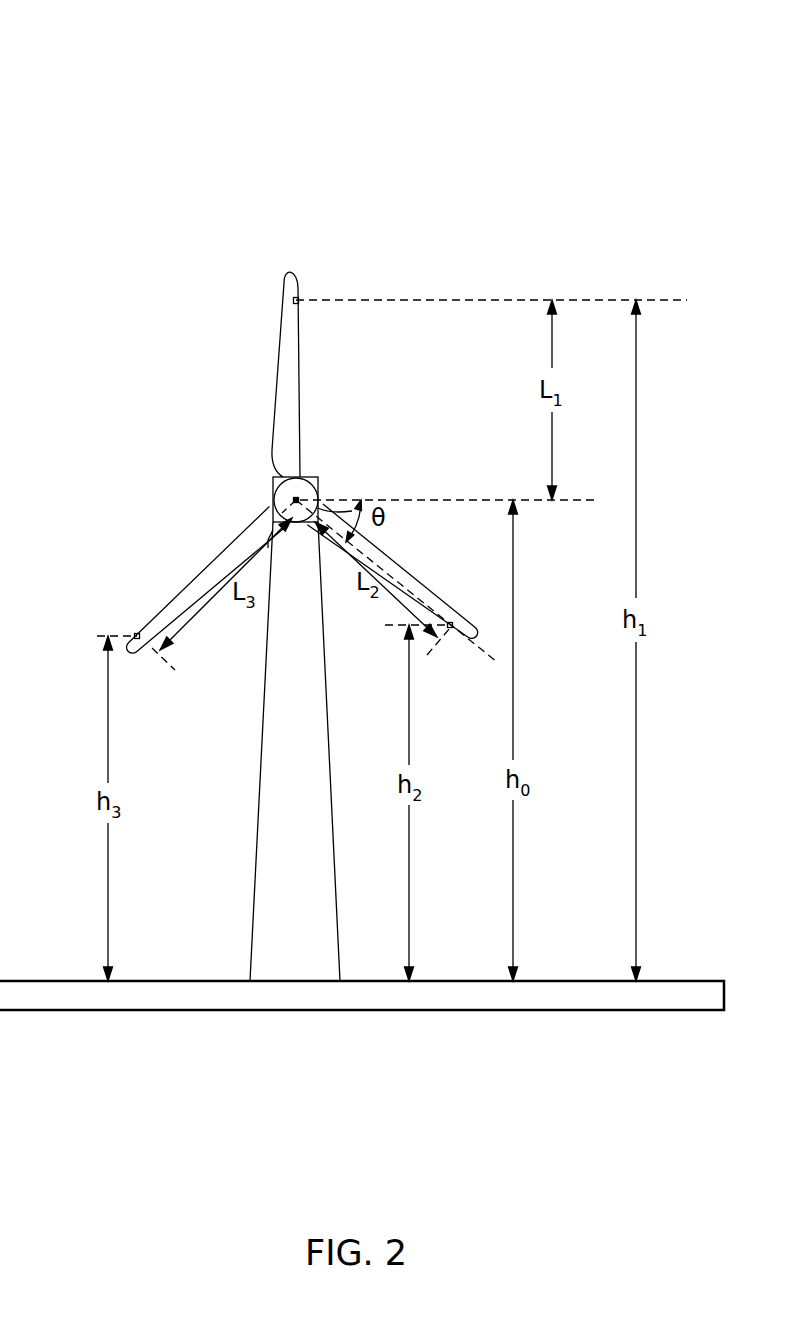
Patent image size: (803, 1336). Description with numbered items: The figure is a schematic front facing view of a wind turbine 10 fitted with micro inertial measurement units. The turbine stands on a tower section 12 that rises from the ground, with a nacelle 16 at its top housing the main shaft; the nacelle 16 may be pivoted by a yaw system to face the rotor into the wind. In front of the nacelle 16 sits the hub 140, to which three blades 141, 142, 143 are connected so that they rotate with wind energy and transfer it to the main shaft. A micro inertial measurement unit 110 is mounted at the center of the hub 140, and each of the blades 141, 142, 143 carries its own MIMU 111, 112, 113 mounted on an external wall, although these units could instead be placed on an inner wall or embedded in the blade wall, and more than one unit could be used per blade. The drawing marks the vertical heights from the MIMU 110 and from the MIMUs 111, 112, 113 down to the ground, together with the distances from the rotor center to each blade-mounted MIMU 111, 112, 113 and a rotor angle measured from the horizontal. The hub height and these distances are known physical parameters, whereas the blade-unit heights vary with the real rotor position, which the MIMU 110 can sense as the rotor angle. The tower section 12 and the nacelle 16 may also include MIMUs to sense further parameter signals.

The wind turbine 10 is at (157, 122).
The tower section 12 is at (275, 896).
The nacelle 16 is at (279, 477).
The micro inertial measurement unit 110 is at (287, 495).
The micro inertial measurement unit 111 is at (298, 297).
The micro inertial measurement unit 112 is at (450, 630).
The micro inertial measurement unit 113 is at (137, 634).
The hub 140 is at (306, 490).
The blade 141 is at (291, 410).
The blade 142 is at (417, 587).
The blade 143 is at (190, 597).